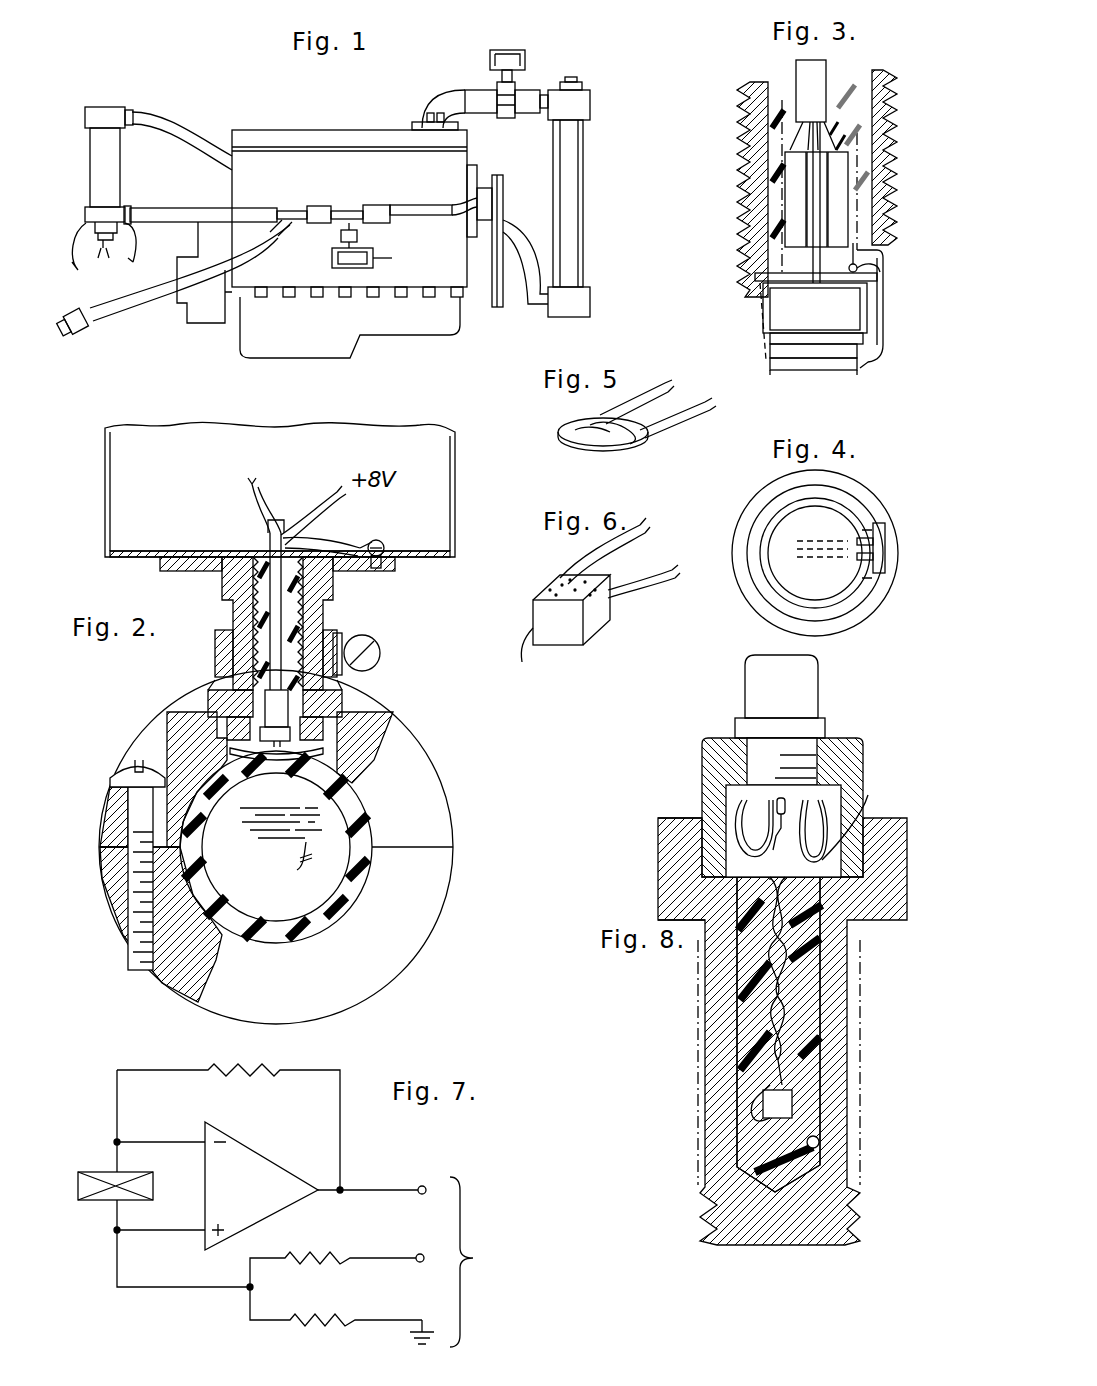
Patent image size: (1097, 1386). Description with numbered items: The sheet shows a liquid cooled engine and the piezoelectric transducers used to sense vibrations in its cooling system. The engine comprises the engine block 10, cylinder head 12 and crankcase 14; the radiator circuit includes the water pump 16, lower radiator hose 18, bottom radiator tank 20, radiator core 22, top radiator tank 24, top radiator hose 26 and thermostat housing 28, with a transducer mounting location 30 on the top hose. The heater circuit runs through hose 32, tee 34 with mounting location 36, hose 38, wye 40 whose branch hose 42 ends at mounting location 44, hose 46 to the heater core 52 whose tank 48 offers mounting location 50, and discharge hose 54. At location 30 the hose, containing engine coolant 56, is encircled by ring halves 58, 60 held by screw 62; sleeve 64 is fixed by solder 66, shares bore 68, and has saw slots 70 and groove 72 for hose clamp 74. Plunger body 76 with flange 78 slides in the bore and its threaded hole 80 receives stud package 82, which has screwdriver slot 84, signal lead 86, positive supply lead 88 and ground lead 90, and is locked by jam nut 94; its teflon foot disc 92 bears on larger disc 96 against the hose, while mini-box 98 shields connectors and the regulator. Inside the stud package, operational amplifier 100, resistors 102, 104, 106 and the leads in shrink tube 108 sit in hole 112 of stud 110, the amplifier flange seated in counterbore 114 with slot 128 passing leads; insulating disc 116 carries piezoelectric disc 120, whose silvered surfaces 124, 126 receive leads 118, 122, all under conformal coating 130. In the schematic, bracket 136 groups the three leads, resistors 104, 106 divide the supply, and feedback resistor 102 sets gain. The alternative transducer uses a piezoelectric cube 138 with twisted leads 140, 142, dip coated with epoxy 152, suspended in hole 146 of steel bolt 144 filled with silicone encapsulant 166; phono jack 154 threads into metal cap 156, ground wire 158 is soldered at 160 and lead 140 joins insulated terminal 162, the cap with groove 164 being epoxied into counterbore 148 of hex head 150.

In FIG. 1, the engine block 10 is at (230, 179).
In FIG. 1, the cylinder head 12 is at (292, 130).
In FIG. 1, the crankcase 14 is at (358, 333).
In FIG. 1, the water pump 16 is at (490, 176).
In FIG. 1, the lower radiator hose 18 is at (522, 308).
In FIG. 1, the bottom radiator tank 20 is at (566, 318).
In FIG. 1, the radiator core 22 is at (583, 200).
In FIG. 1, the top radiator tank 24 is at (592, 102).
In FIG. 1, the top radiator hose 26 is at (536, 92).
In FIG. 2, the top radiator hose 26 is at (203, 787).
In FIG. 1, the thermostat housing 28 is at (437, 92).
In FIG. 1, the transducer mounting location 30 is at (497, 88).
In FIG. 1, the hose 32 is at (413, 205).
In FIG. 1, the tee 34 is at (366, 204).
In FIG. 1, the alternative transducer mounting location 36 is at (358, 235).
In FIG. 1, the hose 38 is at (318, 206).
In FIG. 1, the wye 40 is at (292, 212).
In FIG. 1, the hose 42 is at (272, 262).
In FIG. 1, the alternative transducer mounting location 44 is at (100, 328).
In FIG. 1, the hose 46 is at (158, 223).
In FIG. 1, the tank 48 is at (87, 258).
In FIG. 1, the alternative transducer mounting location 50 is at (144, 250).
In FIG. 1, the heater core 52 is at (112, 156).
In FIG. 1, the hose 54 is at (157, 110).
In FIG. 2, the engine coolant 56 is at (281, 845).
In FIG. 2, the clamping ring half 58 is at (96, 877).
In FIG. 2, the clamping ring half 60 is at (98, 822).
In FIG. 2, the screw 62 is at (122, 770).
In FIG. 2, the sleeve 64 is at (225, 684).
In FIG. 2, the solder 66 is at (208, 705).
In FIG. 2, the bore 68 is at (300, 762).
In FIG. 2, the axial saw slots 70 is at (222, 630).
In FIG. 2, the rectangular groove 72 is at (340, 633).
In FIG. 2, the worm screw hose clamp 74 is at (381, 649).
In FIG. 2, the plunger body 76 is at (333, 590).
In FIG. 2, the flange 78 is at (385, 562).
In FIG. 2, the internally threaded hole 80 is at (268, 560).
In FIG. 2, the stud package 82 is at (252, 600).
In FIG. 3, the stud package 82 is at (760, 105).
In FIG. 2, the screwdriver slot 84 is at (307, 547).
In FIG. 2, the signal lead 86 is at (253, 487).
In FIG. 7, the signal lead 86 is at (328, 1196).
In FIG. 2, the positive supply lead 88 is at (333, 490).
In FIG. 7, the positive supply lead 88 is at (390, 1263).
In FIG. 2, the ground lead 90 is at (320, 530).
In FIG. 7, the ground lead 90 is at (372, 1322).
In FIG. 2, the teflon foot disc 92 is at (287, 781).
In FIG. 3, the teflon foot disc 92 is at (789, 372).
In FIG. 4, the teflon foot disc 92 is at (828, 588).
In FIG. 2, the jam nut 94 is at (345, 694).
In FIG. 2, the teflon disc 96 is at (252, 772).
In FIG. 1, the metal mini-box 98 is at (374, 256).
In FIG. 2, the metal mini-box 98 is at (456, 491).
In FIG. 3, the operational amplifier 100 is at (783, 307).
In FIG. 4, the operational amplifier 100 is at (840, 507).
In FIG. 7, the operational amplifier 100 is at (250, 1147).
In FIG. 3, the feedback resistor 102 is at (790, 160).
In FIG. 7, the feedback resistor 102 is at (260, 1070).
In FIG. 3, the resistor 104 is at (808, 176).
In FIG. 7, the resistor 104 is at (304, 1260).
In FIG. 3, the resistor 106 is at (837, 190).
In FIG. 7, the resistor 106 is at (313, 1320).
In FIG. 2, the shrink tube 108 is at (265, 514).
In FIG. 3, the shrink tube 108 is at (820, 72).
In FIG. 3, the stud 110 is at (883, 96).
In FIG. 3, the hole 112 is at (852, 86).
In FIG. 3, the counterbore 114 is at (760, 293).
In FIG. 4, the counterbore 114 is at (848, 513).
In FIG. 3, the polyimide insulating disc 116 is at (773, 336).
In FIG. 3, the lead 118 is at (888, 317).
In FIG. 4, the lead 118 is at (882, 542).
In FIG. 5, the lead 118 is at (640, 400).
In FIG. 7, the lead 118 is at (145, 1141).
In FIG. 3, the piezoelectric disc 120 is at (770, 351).
In FIG. 5, the piezoelectric disc 120 is at (563, 432).
In FIG. 7, the piezoelectric disc 120 is at (95, 1170).
In FIG. 3, the lead 122 is at (880, 345).
In FIG. 4, the lead 122 is at (883, 550).
In FIG. 5, the lead 122 is at (697, 420).
In FIG. 7, the lead 122 is at (145, 1233).
In FIG. 5, the circular surface 124 is at (617, 440).
In FIG. 5, the circular surface 126 is at (605, 450).
In FIG. 3, the slot 128 is at (880, 268).
In FIG. 4, the slot 128 is at (880, 535).
In FIG. 3, the conformal coating 130 is at (892, 188).
In FIG. 7, the bracket 136 is at (489, 1262).
In FIG. 6, the piezoelectric element 138 is at (555, 630).
In FIG. 8, the piezoelectric element 138 is at (795, 1100).
In FIG. 6, the lead 140 is at (638, 532).
In FIG. 8, the lead 140 is at (820, 903).
In FIG. 6, the lead 142 is at (640, 607).
In FIG. 8, the lead 142 is at (800, 873).
In FIG. 8, the steel bolt 144 is at (703, 1037).
In FIG. 8, the hole 146 is at (820, 1142).
In FIG. 8, the counterbore 148 is at (863, 825).
In FIG. 8, the hex head 150 is at (890, 848).
In FIG. 8, the conformal coating 152 is at (840, 1040).
In FIG. 8, the phono jack connector 154 is at (818, 680).
In FIG. 8, the metal cap 156 is at (847, 740).
In FIG. 8, the copper wire 158 is at (847, 787).
In FIG. 8, the solder point 160 is at (868, 797).
In FIG. 8, the insulated terminal 162 is at (745, 805).
In FIG. 8, the groove 164 is at (697, 853).
In FIG. 8, the silicone elastomeric encapsulant 166 is at (820, 990).